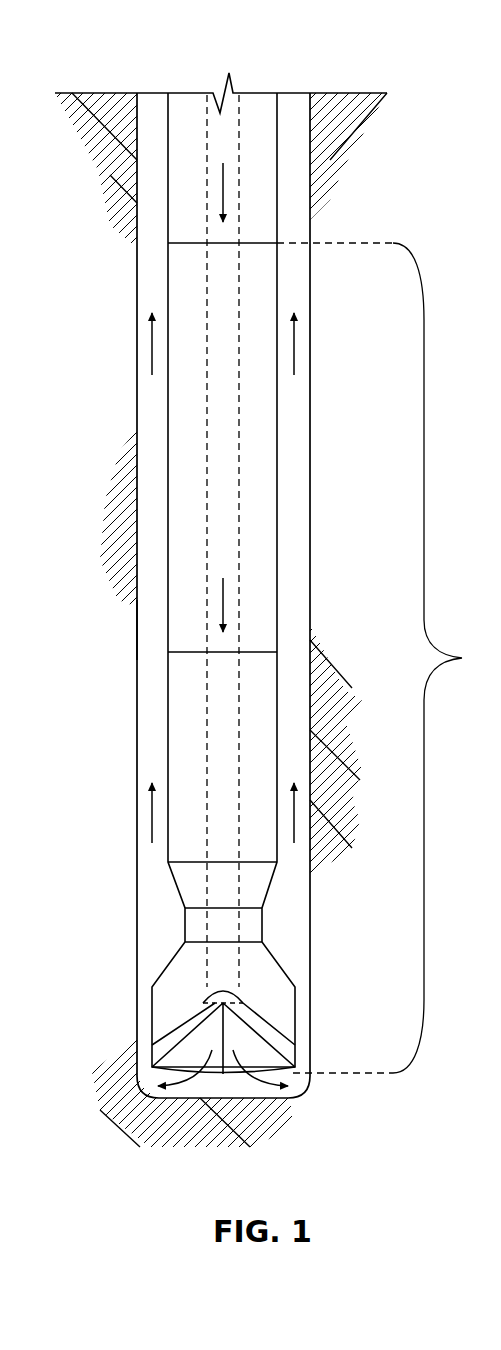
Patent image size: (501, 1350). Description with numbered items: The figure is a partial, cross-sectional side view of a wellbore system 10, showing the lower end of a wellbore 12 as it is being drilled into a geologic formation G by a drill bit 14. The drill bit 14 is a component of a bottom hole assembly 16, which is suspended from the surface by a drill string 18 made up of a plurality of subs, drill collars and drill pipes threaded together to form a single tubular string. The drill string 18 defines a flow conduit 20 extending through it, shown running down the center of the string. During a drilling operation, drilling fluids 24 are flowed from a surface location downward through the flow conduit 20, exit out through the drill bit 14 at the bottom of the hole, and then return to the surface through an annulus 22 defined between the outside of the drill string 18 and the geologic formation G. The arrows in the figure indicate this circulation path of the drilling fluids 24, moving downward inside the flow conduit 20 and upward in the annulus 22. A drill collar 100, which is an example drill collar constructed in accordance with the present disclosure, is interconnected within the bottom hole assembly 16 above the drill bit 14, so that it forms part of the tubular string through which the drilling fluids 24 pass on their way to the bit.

The wellbore system 10 is at (373, 42).
The wellbore 12 is at (138, 612).
The drill bit 14 is at (283, 1000).
The bottom hole assembly 16 is at (388, 658).
The drill string 18 is at (285, 487).
The flow conduit 20 is at (239, 433).
The annulus 22 is at (150, 703).
The drilling fluids 24 is at (220, 188).
The drill collar 100 is at (168, 418).
The geologic formation G is at (122, 497).